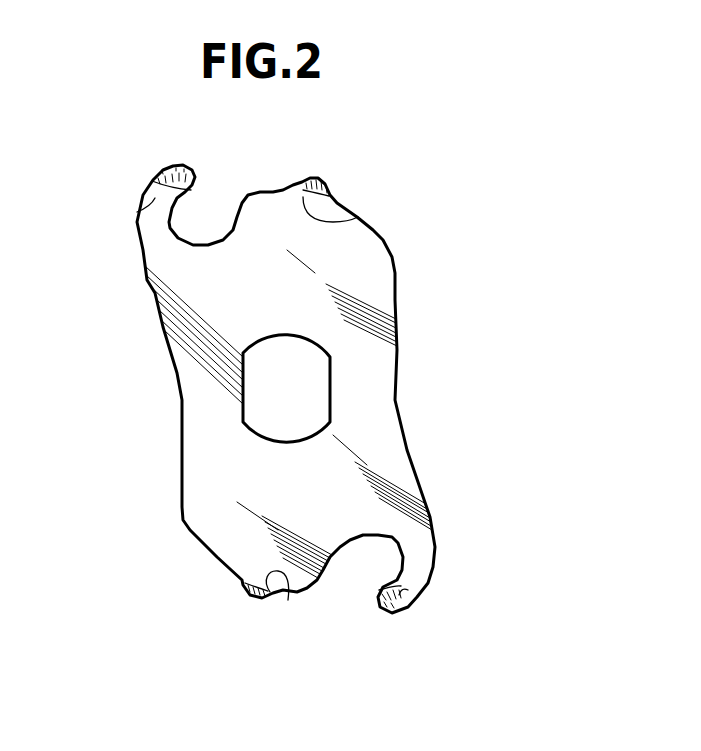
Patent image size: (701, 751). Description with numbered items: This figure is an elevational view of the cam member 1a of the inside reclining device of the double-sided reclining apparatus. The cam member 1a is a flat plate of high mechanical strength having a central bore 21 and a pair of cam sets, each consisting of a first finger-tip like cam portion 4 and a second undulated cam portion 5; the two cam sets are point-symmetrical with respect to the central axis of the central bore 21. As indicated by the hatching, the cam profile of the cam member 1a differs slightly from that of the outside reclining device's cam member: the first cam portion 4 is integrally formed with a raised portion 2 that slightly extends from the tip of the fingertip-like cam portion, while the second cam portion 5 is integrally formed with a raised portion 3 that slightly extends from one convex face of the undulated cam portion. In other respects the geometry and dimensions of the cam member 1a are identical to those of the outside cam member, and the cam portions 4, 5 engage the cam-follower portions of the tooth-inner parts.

The cam member 1a is at (414, 346).
The raised portion 2 is at (192, 170).
The raised portion 3 is at (322, 180).
The first cam portion 4 is at (137, 212).
The second cam portion 5 is at (358, 217).
The central bore 21 is at (317, 395).